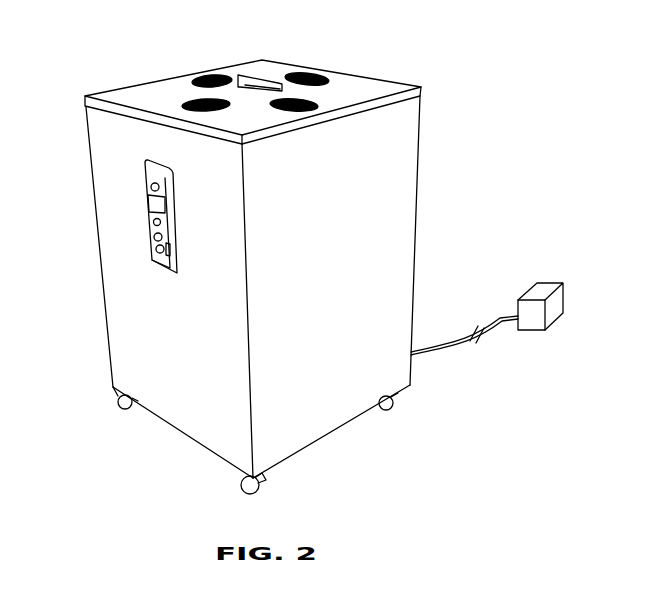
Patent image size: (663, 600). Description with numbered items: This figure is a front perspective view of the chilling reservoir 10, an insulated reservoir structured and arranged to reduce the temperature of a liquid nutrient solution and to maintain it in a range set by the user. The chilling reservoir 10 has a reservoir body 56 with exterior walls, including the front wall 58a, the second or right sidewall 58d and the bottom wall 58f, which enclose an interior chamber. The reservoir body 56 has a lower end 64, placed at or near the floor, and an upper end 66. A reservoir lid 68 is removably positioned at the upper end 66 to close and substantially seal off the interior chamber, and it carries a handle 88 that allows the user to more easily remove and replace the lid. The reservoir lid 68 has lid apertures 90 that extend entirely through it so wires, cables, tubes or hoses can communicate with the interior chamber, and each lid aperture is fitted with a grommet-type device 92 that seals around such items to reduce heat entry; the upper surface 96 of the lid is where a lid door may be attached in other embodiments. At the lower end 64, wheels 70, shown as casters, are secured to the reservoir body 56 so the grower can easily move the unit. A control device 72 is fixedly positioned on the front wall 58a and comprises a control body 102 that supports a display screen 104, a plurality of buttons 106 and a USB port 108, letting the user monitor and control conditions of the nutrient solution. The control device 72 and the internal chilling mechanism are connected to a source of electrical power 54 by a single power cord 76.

The chilling reservoir 10 is at (496, 57).
The source of electrical power 54 is at (544, 290).
The reservoir body 56 is at (395, 205).
The front wall 58a is at (180, 405).
The second or right sidewall 58d is at (372, 293).
The bottom wall 58f is at (342, 444).
The lower end 64 is at (426, 384).
The upper end 66 is at (435, 97).
The reservoir lid 68 is at (368, 90).
The wheels 70 is at (393, 408).
The control device 72 is at (142, 274).
The power cord 76 is at (502, 323).
The handle 88 is at (240, 74).
The lid apertures 90 is at (188, 69).
The grommet-type device 92 is at (311, 74).
The upper surface 96 is at (126, 86).
The control body 102 is at (150, 249).
The display screen 104 is at (147, 203).
The buttons 106 is at (152, 225).
The USB port 108 is at (183, 262).